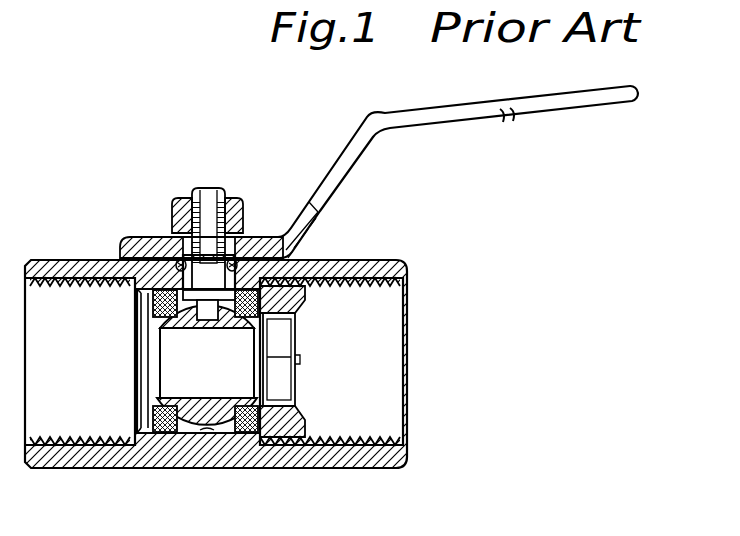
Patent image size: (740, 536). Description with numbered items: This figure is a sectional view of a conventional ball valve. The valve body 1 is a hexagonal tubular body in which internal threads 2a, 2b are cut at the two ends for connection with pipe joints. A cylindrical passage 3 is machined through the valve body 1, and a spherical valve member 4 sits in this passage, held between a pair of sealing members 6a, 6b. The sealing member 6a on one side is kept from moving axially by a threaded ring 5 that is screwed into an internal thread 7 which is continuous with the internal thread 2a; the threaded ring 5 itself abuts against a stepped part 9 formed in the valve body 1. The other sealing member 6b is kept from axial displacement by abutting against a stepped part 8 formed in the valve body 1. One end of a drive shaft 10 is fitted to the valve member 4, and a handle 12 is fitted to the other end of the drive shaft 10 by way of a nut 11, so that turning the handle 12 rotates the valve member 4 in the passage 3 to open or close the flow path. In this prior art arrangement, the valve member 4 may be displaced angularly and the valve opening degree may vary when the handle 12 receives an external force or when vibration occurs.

The valve body 1 is at (107, 272).
The internal thread 2a is at (377, 285).
The internal thread 2b is at (52, 300).
The cylindrical passage 3 is at (204, 432).
The spherical valve member 4 is at (182, 434).
The threaded ring 5 is at (283, 432).
The sealing member 6a is at (248, 283).
The sealing member 6b is at (163, 290).
The internal thread 7 is at (312, 450).
The stepped part 8 is at (152, 295).
The stepped part 9 is at (251, 437).
The drive shaft 10 is at (208, 197).
The nut 11 is at (178, 200).
The handle 12 is at (473, 112).